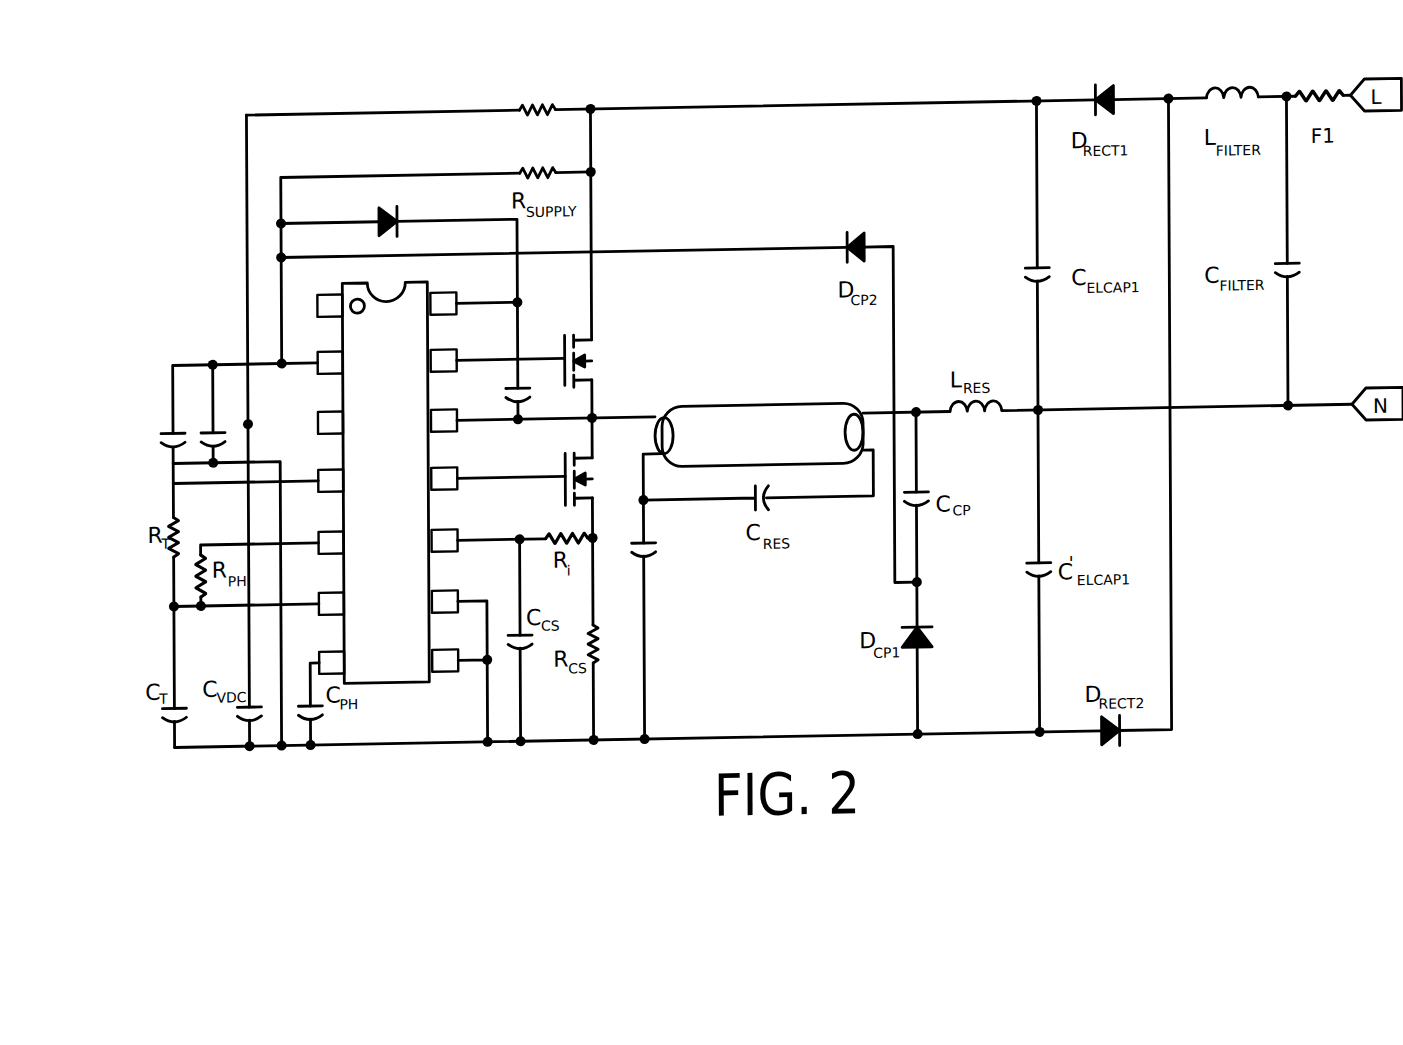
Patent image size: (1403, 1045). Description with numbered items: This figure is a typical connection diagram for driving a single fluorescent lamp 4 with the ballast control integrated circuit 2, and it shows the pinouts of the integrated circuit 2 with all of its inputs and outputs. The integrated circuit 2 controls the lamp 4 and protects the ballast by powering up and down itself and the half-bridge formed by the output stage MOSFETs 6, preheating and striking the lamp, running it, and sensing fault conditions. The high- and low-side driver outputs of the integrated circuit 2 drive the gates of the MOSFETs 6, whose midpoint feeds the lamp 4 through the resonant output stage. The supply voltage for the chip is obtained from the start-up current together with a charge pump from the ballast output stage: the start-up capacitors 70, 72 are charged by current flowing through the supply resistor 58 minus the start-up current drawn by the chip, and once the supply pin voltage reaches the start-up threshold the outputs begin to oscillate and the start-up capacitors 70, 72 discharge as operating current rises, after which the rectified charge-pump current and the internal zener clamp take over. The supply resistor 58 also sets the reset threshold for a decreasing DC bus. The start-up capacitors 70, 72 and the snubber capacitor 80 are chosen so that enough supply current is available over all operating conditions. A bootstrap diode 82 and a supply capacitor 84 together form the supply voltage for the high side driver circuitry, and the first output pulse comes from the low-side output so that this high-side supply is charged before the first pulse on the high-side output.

The integrated circuit 2 is at (396, 389).
The fluorescent lamp 4 is at (769, 457).
The MOSFET 6 is at (593, 351).
The supply resistor 58 is at (523, 173).
The start-up capacitor 70 is at (163, 434).
The start-up capacitor 72 is at (205, 438).
The snubber capacitor 80 is at (657, 558).
The bootstrap diode 82 is at (399, 211).
The supply capacitor 84 is at (521, 388).